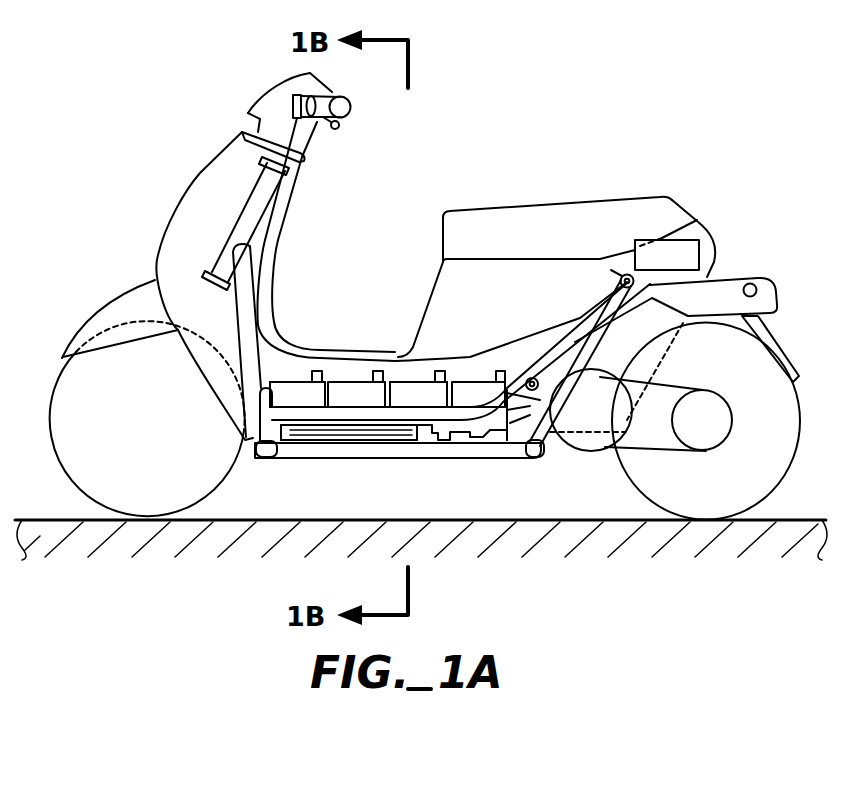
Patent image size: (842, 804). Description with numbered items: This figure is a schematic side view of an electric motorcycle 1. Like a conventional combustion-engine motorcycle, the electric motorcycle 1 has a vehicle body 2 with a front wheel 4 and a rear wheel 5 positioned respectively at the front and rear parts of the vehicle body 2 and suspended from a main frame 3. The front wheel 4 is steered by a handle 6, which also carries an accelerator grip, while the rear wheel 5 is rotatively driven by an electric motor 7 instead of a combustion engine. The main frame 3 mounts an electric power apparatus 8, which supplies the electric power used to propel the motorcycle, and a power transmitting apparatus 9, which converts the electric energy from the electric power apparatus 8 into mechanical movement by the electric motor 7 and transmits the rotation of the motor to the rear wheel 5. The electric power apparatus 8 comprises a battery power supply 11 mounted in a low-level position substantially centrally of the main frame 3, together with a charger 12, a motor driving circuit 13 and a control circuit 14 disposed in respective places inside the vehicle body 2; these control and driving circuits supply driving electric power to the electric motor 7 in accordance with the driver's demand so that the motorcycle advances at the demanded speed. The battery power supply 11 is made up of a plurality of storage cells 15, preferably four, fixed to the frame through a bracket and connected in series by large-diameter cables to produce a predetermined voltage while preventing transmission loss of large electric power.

The electric motorcycle 1 is at (528, 126).
The vehicle body 2 is at (588, 200).
The main frame 3 is at (580, 337).
The front wheel 4 is at (70, 394).
The rear wheel 5 is at (786, 432).
The handle 6 is at (322, 100).
The electric motor 7 is at (556, 463).
The electric power apparatus 8 is at (309, 450).
The power transmitting apparatus 9 is at (597, 458).
The battery power supply 11 is at (401, 368).
The charger 12 is at (388, 428).
The motor driving circuit 13 is at (349, 463).
The control circuit 14 is at (689, 253).
The storage cell 15 is at (292, 393).